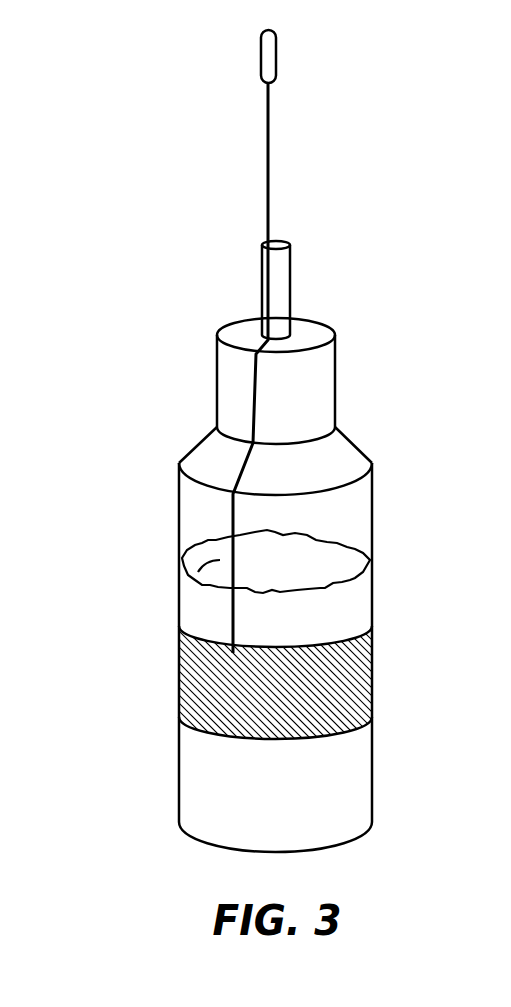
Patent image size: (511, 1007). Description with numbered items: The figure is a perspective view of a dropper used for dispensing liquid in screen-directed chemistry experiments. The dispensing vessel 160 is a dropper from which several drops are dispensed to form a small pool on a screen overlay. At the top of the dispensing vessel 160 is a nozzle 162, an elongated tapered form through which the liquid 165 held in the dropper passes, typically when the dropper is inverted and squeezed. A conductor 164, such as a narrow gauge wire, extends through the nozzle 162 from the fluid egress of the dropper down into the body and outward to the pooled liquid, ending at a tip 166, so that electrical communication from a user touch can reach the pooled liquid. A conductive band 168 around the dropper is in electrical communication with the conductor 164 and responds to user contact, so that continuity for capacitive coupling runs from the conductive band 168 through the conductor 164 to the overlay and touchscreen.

The dispensing vessel 160 is at (374, 508).
The nozzle 162 is at (283, 273).
The conductor 164 is at (270, 123).
The liquid 165 is at (208, 558).
The tip 166 is at (271, 53).
The conductive band 168 is at (207, 692).